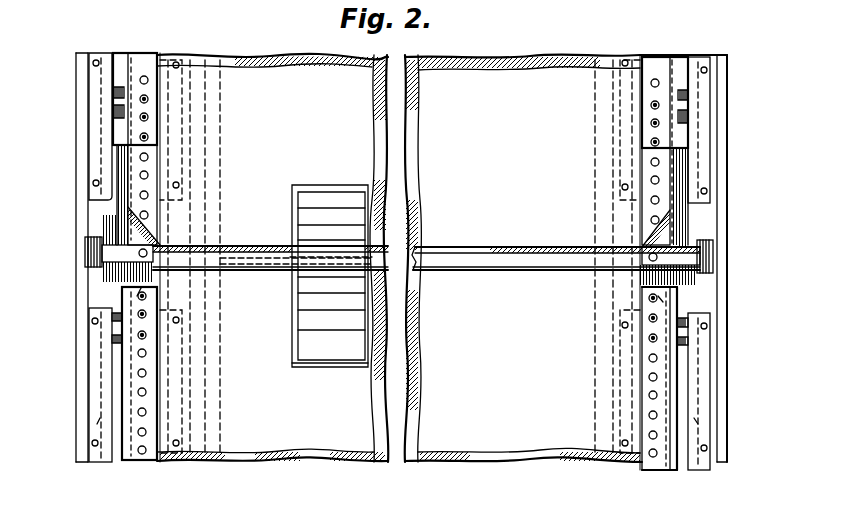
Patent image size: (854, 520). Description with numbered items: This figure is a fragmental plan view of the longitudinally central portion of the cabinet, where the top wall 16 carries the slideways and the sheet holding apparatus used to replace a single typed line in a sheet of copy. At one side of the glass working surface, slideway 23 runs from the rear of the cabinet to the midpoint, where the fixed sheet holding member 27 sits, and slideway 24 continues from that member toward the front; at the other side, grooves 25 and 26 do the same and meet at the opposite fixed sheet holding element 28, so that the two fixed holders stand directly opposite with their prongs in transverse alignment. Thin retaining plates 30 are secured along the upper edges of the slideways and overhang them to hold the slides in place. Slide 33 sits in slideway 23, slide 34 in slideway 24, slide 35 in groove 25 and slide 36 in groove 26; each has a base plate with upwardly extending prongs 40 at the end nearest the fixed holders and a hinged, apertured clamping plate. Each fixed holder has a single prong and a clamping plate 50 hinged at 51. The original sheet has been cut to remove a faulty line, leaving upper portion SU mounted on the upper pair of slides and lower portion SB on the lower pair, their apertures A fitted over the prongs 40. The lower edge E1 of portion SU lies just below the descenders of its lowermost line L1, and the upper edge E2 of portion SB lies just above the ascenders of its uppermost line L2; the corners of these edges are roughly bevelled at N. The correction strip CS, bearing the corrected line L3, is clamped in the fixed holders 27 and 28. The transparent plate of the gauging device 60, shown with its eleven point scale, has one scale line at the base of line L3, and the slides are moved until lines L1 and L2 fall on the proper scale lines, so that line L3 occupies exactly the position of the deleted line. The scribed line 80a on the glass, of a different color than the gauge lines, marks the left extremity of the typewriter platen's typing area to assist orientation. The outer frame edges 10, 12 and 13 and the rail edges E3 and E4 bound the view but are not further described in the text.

The lower edge of left sheet 10 is at (218, 462).
The left side frame member 12 is at (74, 378).
The right side frame member 13 is at (728, 398).
The top wall 16 is at (552, 445).
The slideway 23 is at (685, 214).
The slideway 24 is at (706, 428).
The groove 25 is at (122, 170).
The groove 26 is at (95, 428).
The sheet holding member 27 is at (685, 250).
The sheet holding element 28 is at (115, 246).
The retaining plates 30 is at (703, 163).
The slide 33 is at (688, 131).
The slide 34 is at (678, 372).
The slide 35 is at (126, 128).
The slide 36 is at (118, 293).
The prongs 40 is at (148, 137).
The clamping plate 50 is at (690, 274).
The hinge 51 is at (716, 258).
The gauging device 60 is at (285, 372).
The line 80a is at (222, 98).
The apertures A is at (148, 215).
The strip CS is at (528, 262).
The lower edge E1 is at (190, 246).
The upper edge E2 is at (195, 270).
The upper edge of right rail E3 is at (455, 252).
The lower edge of right rail E4 is at (446, 270).
The lowermost line L1 is at (325, 240).
The uppermost line L2 is at (320, 275).
The line L3 is at (352, 258).
The bevelled corners N is at (150, 276).
The sheet portion SB is at (272, 445).
The sheet portion SU is at (192, 76).